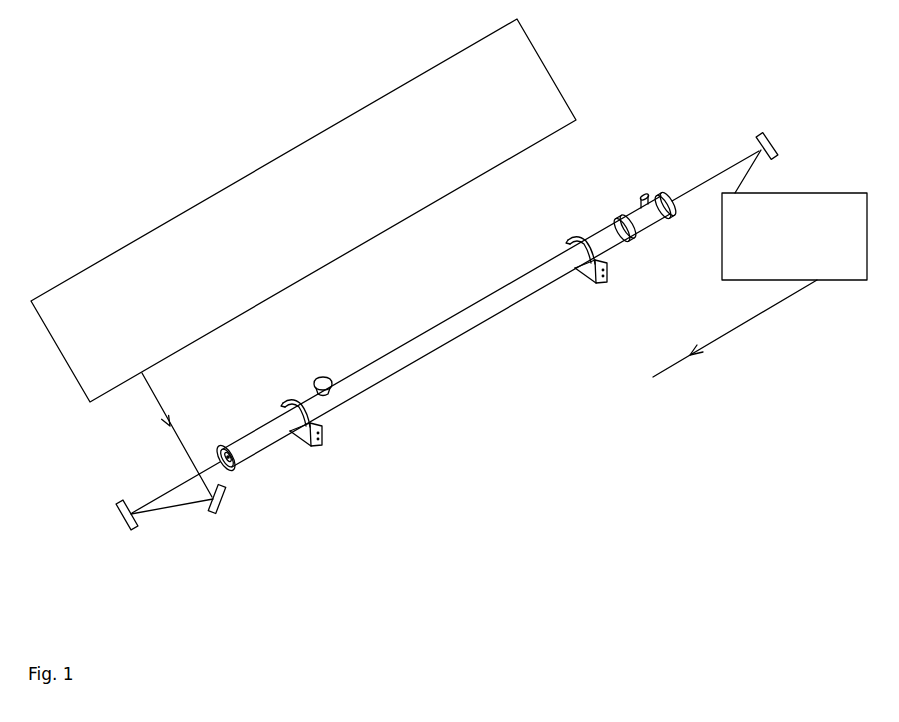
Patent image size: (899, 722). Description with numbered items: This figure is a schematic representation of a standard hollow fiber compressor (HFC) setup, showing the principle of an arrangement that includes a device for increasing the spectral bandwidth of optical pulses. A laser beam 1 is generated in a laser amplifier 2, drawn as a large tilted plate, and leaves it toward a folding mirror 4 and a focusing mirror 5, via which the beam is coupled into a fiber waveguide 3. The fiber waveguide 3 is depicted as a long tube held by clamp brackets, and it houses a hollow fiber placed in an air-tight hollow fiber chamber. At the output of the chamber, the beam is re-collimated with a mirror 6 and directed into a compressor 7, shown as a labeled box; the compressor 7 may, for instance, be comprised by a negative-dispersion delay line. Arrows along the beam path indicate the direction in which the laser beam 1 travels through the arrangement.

The laser beam 1 is at (183, 448).
The laser amplifier 2 is at (148, 233).
The fiber waveguide 3 is at (392, 373).
The folding mirror 4 is at (226, 506).
The focusing mirror 5 is at (132, 528).
The mirror 6 is at (763, 132).
The compressor 7 is at (844, 268).